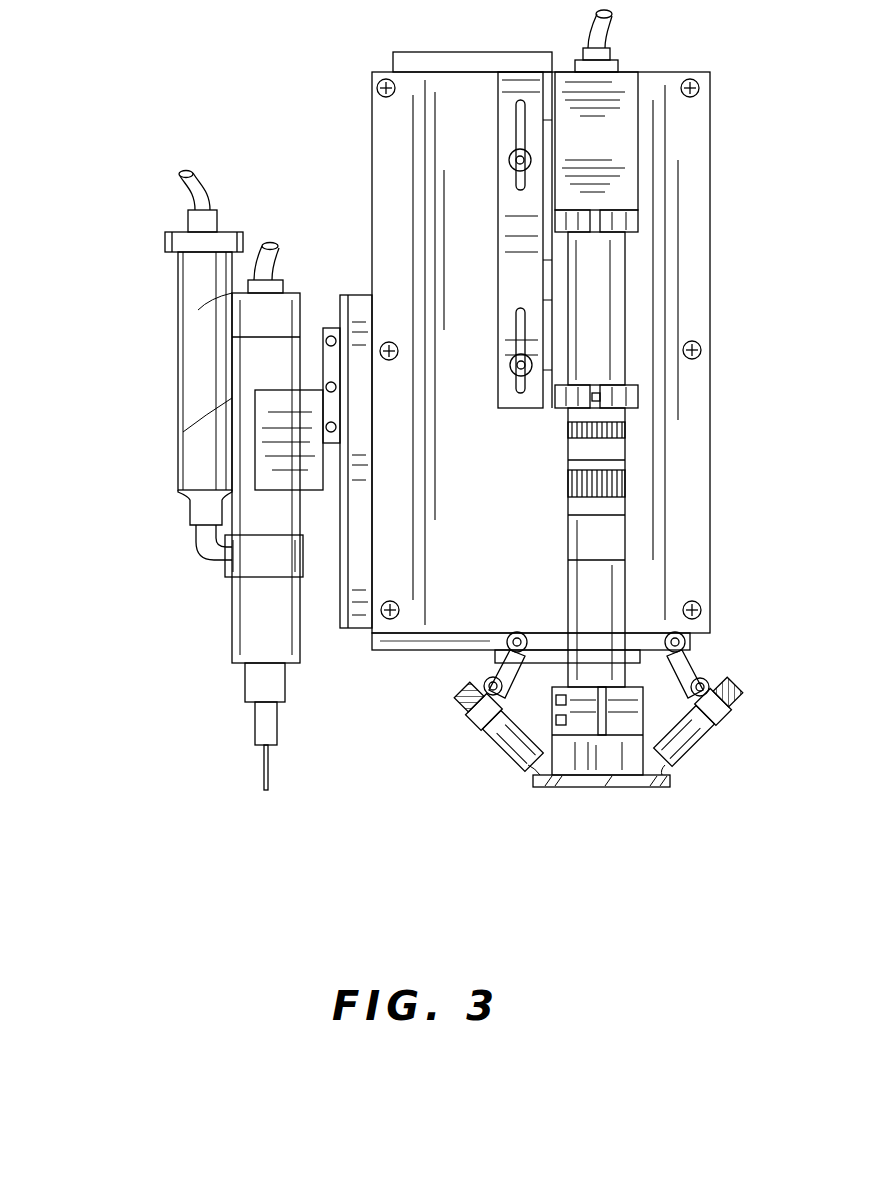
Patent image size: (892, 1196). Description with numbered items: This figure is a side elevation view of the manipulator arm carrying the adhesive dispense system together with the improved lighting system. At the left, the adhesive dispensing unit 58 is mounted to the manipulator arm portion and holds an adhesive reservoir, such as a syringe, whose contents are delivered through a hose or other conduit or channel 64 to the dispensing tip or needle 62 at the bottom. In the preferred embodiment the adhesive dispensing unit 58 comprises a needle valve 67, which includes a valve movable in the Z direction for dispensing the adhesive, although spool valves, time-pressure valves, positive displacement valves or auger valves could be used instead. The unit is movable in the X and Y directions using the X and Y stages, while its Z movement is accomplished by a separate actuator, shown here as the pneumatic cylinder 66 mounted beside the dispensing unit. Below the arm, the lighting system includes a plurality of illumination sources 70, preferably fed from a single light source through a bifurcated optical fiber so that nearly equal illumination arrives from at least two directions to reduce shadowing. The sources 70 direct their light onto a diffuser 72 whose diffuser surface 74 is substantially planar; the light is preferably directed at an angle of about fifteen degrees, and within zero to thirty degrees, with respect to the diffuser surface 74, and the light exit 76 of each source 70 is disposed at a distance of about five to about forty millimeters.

The adhesive dispensing unit 58 is at (176, 463).
The dispensing tip or needle 62 is at (262, 770).
The hose or other conduit or channel 64 is at (200, 556).
The pneumatic cylinder 66 is at (338, 320).
The needle valve 67 is at (248, 356).
The illumination source 70 is at (492, 742).
The diffuser 72 is at (637, 787).
The diffuser surface 74 is at (558, 777).
The light exit 76 is at (535, 768).